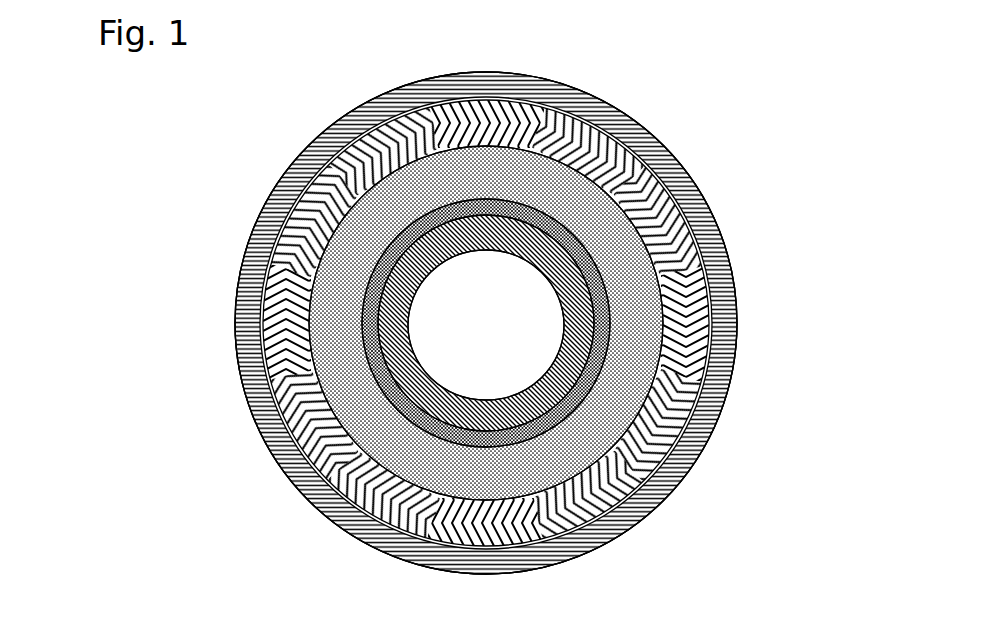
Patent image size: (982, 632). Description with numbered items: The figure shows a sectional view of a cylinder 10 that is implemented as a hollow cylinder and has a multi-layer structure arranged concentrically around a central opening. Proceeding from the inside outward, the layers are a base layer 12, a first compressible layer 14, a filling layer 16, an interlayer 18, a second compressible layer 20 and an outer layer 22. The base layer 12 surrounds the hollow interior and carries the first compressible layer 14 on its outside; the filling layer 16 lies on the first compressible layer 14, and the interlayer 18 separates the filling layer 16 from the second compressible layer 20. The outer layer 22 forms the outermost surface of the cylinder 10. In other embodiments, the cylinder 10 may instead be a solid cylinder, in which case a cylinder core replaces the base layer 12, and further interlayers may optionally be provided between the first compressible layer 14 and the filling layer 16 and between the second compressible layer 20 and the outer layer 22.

The cylinder 10 is at (699, 125).
The base layer 12 is at (555, 285).
The first compressible layer 14 is at (433, 388).
The filling layer 16 is at (728, 288).
The interlayer 18 is at (708, 220).
The second compressible layer 20 is at (230, 278).
The outer layer 22 is at (665, 482).